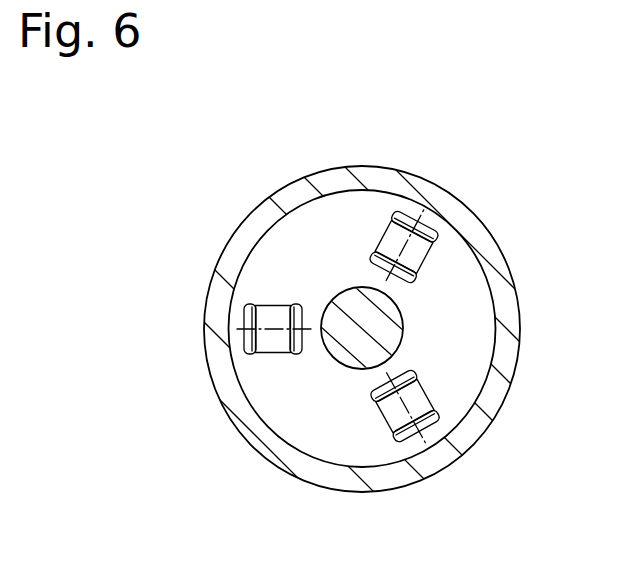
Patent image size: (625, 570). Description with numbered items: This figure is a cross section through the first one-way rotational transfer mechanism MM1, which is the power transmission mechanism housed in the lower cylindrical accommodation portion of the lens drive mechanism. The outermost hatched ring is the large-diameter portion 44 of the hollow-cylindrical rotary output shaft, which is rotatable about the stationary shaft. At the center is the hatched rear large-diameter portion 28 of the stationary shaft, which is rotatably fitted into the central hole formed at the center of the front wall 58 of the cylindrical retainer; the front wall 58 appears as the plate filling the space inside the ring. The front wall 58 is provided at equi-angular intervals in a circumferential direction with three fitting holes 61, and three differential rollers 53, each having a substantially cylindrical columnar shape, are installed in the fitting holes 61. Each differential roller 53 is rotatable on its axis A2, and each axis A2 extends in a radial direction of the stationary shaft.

The first one-way rotational transfer mechanism MM1 is at (188, 172).
The large-diameter portion 44 is at (462, 208).
The front wall 58 is at (465, 323).
The rear large-diameter portion 28 is at (362, 352).
The fitting holes 61 is at (425, 277).
The differential rollers 53 is at (272, 350).
The axis of differential roller A2 is at (275, 331).